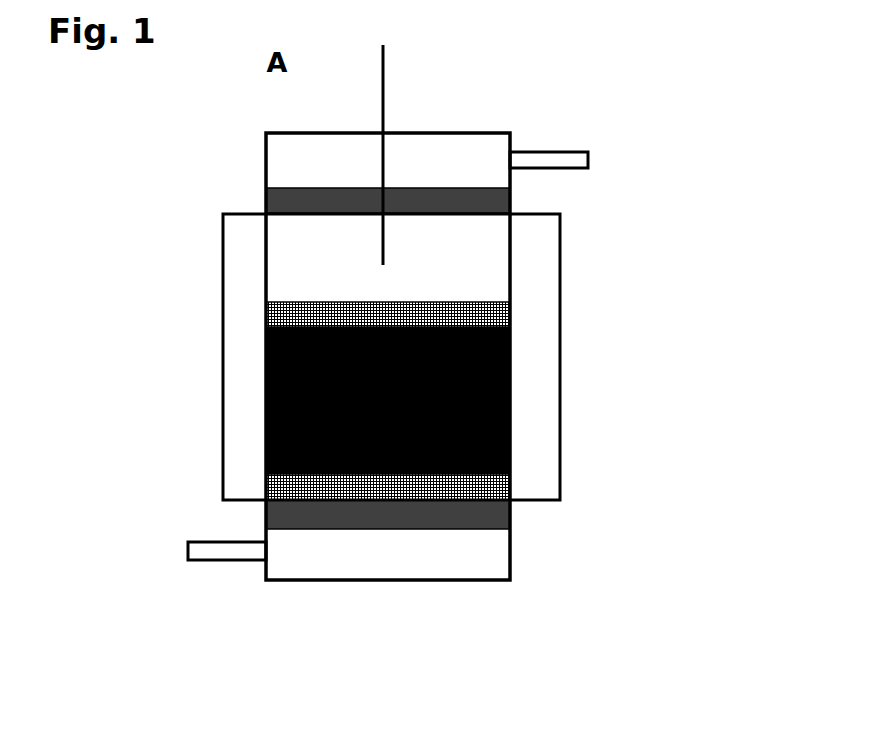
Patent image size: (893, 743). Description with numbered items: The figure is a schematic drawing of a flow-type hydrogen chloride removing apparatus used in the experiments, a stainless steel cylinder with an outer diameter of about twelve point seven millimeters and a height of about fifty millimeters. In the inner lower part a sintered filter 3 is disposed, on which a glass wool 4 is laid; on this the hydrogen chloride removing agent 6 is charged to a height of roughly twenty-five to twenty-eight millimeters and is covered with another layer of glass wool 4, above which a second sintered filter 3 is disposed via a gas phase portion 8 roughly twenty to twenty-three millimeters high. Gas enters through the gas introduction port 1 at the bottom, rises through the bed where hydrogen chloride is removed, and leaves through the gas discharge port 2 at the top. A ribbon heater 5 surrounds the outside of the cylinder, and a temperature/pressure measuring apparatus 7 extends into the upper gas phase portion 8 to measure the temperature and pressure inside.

The gas introduction port 1 is at (166, 575).
The gas discharge port 2 is at (617, 142).
The sintered filter 3 is at (532, 192).
The glass wool 4 is at (538, 296).
The heater 5 is at (189, 287).
The hydrogen chloride removing agent 6 is at (233, 394).
The temperature/pressure measuring apparatus 7 is at (414, 59).
The gas phase portion 8 is at (311, 253).